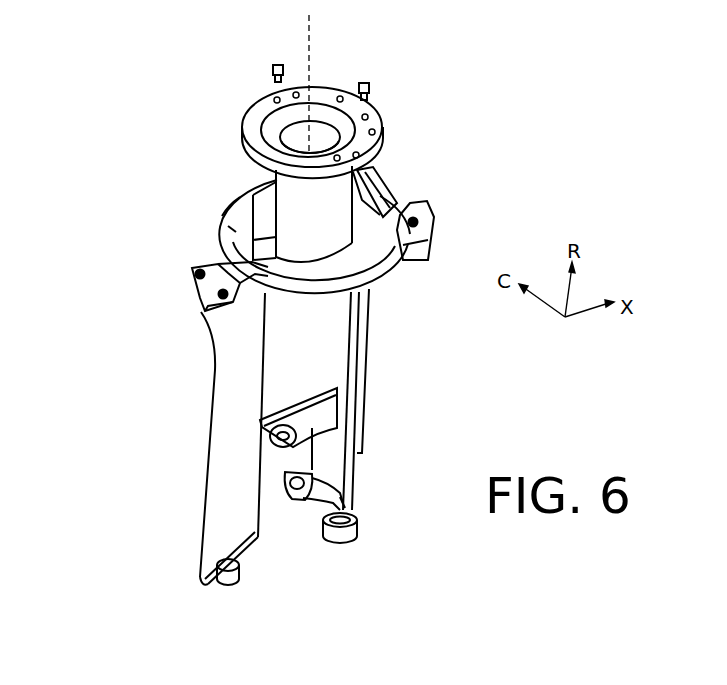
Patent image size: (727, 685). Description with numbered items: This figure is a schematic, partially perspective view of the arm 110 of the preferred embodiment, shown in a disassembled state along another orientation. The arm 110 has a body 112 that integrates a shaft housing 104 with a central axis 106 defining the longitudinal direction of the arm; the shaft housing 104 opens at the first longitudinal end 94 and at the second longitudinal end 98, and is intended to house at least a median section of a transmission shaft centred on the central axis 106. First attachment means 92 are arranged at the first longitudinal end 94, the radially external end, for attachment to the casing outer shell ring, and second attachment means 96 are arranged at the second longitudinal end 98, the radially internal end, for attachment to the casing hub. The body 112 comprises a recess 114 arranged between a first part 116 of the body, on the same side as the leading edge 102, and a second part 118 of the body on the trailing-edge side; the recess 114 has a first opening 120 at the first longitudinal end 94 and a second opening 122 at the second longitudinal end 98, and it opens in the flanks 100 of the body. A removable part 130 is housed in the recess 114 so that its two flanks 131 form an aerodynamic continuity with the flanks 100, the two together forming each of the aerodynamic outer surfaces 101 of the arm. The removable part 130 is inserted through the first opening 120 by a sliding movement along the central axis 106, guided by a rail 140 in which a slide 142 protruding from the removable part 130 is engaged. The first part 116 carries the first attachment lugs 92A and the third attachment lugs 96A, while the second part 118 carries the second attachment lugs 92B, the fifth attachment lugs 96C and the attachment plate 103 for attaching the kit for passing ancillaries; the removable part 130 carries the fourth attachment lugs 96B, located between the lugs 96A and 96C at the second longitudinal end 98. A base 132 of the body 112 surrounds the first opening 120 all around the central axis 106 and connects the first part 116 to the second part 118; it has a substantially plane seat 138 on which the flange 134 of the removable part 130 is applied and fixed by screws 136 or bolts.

The first attachment means 92 is at (153, 287).
The first attachment lugs 92A is at (192, 268).
The second attachment lugs 92B is at (425, 206).
The first longitudinal end 94 is at (222, 216).
The second attachment means 96 is at (226, 607).
The third attachment lugs 96A is at (223, 588).
The fourth attachment lugs 96B is at (345, 477).
The fifth attachment lugs 96C is at (342, 544).
The second longitudinal end 98 is at (252, 545).
The flanks of the body 100 is at (240, 450).
The aerodynamic outer surfaces 101 is at (283, 385).
The leading edge 102 is at (207, 458).
The attachment plate 103 is at (366, 440).
The shaft housing 104 is at (332, 130).
The central axis 106 is at (305, 62).
The arm 110 is at (122, 165).
The body of the arm 112 is at (199, 505).
The recess 114 is at (267, 465).
The first part of the body 116 is at (220, 375).
The second part of the body 118 is at (362, 492).
The first opening 120 is at (228, 226).
The second opening 122 is at (287, 527).
The removable part 130 is at (249, 158).
The flanks of the removable part 131 is at (307, 363).
The base 132 is at (380, 268).
The flange 134 is at (383, 146).
The screws 136 is at (272, 70).
The seat 138 is at (228, 240).
The rail 140 is at (198, 292).
The slide 142 is at (229, 211).